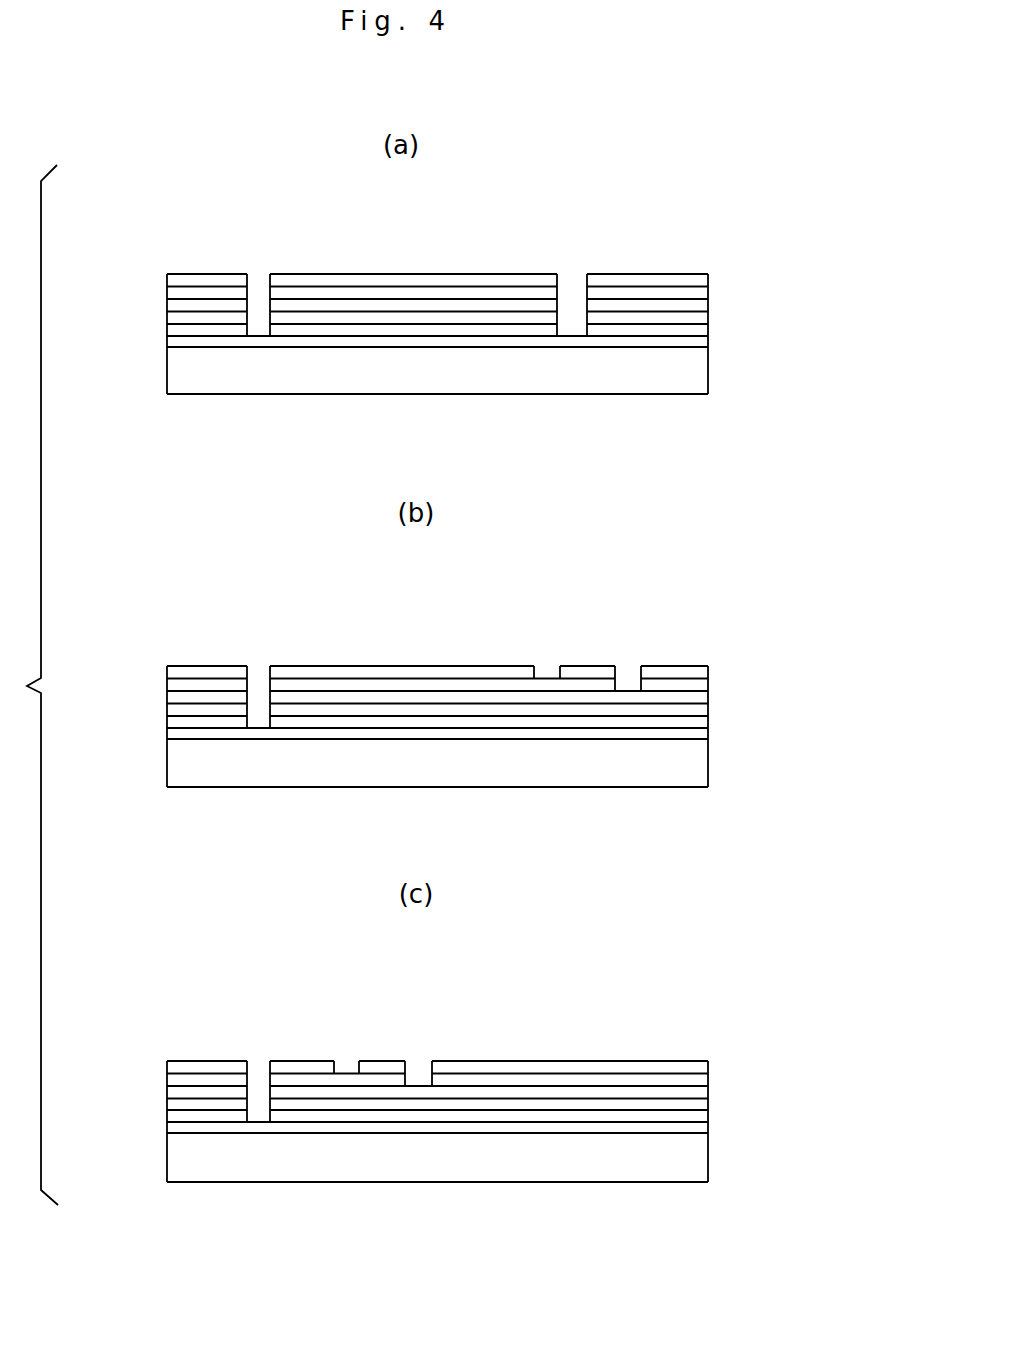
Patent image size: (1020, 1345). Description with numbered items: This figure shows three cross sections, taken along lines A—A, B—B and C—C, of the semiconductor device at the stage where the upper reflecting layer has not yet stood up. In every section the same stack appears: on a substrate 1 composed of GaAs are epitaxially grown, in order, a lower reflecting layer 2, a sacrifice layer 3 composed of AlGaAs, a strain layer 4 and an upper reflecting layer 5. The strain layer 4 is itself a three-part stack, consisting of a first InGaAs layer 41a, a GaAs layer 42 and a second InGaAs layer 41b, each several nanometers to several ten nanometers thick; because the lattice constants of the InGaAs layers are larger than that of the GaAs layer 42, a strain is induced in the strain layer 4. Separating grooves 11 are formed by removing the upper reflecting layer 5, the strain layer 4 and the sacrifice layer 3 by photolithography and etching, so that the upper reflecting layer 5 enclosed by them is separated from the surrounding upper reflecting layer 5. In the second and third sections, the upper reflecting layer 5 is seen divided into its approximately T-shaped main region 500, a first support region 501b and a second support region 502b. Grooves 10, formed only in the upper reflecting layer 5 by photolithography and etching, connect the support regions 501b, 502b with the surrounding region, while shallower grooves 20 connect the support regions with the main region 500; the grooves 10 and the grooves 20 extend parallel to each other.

The substrate 1 is at (698, 373).
The lower reflecting layer 2 is at (700, 342).
The sacrifice layer 3 is at (700, 327).
The strain layer 4 is at (512, 705).
The upper reflecting layer 5 is at (700, 280).
The first InGaAs layer 41a is at (483, 727).
The second InGaAs layer 41b is at (700, 290).
The GaAs layer 42 is at (700, 305).
The grooves 10 is at (624, 663).
The separating grooves 11 is at (260, 272).
The grooves 20 is at (551, 665).
The main region 500 is at (427, 261).
The first support region 501b is at (675, 654).
The second support region 502b is at (387, 1051).